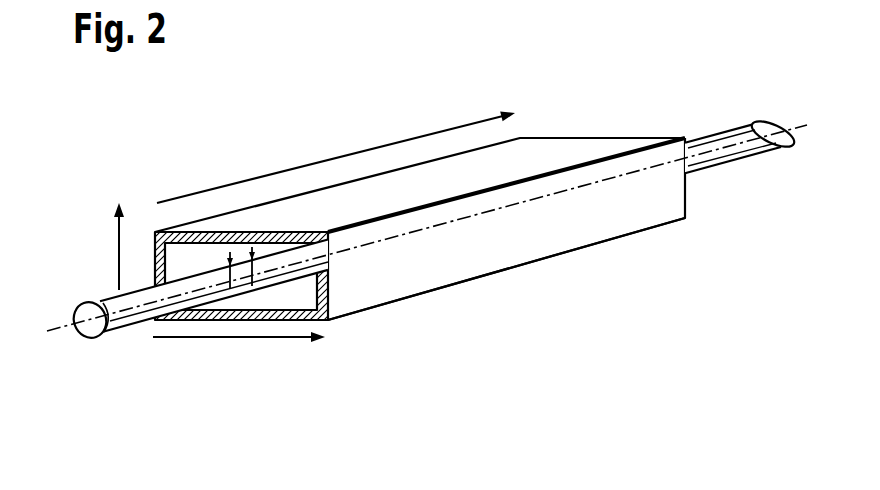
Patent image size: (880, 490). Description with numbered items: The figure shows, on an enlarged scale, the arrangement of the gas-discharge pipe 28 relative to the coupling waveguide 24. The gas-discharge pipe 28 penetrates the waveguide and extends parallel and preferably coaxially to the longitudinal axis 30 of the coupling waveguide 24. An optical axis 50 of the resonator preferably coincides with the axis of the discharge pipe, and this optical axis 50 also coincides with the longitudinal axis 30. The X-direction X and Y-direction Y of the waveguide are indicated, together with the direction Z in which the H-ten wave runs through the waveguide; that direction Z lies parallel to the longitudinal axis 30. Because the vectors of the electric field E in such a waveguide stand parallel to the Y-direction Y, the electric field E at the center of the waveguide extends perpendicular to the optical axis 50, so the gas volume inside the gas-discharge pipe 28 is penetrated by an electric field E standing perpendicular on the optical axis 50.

The coupling waveguide 24 is at (563, 232).
The longitudinal axis 30 is at (410, 232).
The gas-discharge pipe 28 is at (128, 312).
The optical axis 50 is at (57, 326).
The electric field E is at (254, 273).
The X-direction X is at (239, 350).
The Y-direction Y is at (113, 242).
The direction of H10 wave propagation Z is at (336, 143).